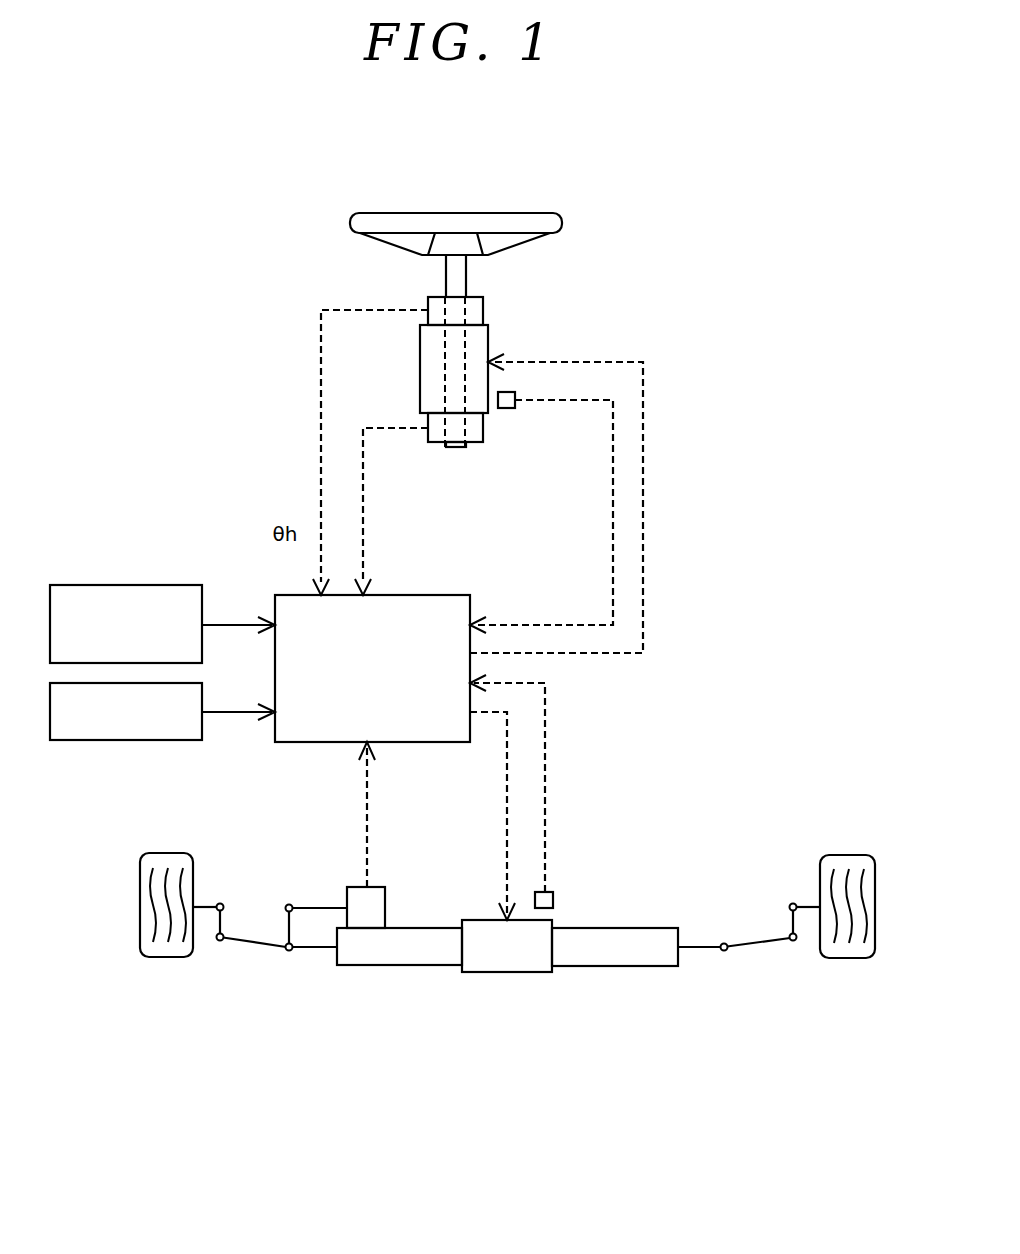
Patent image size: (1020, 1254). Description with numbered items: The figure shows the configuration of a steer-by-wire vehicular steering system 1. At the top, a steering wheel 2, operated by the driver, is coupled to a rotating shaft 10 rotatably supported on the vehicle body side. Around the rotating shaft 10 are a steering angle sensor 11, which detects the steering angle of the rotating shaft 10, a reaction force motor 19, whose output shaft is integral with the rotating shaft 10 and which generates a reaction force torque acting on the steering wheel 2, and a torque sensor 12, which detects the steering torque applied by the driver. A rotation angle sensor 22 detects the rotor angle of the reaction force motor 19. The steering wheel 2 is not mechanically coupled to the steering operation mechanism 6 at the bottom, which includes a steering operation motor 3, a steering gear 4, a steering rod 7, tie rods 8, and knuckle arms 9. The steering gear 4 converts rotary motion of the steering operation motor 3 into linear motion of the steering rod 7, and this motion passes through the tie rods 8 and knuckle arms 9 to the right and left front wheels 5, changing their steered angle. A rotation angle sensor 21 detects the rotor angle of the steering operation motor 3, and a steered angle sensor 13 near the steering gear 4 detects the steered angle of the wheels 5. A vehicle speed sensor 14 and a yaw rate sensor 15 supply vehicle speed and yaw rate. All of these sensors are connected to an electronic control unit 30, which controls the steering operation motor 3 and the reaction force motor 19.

The vehicular steering system 1 is at (677, 255).
The steering wheel 2 is at (545, 228).
The steering operation motor 3 is at (500, 975).
The steering gear 4 is at (400, 960).
The front wheels 5 is at (165, 957).
The steering operation mechanism 6 is at (550, 1012).
The steering rod 7 is at (313, 952).
The tie rods 8 is at (252, 943).
The knuckle arms 9 is at (224, 921).
The rotating shaft 10 is at (460, 278).
The steering angle sensor 11 is at (475, 308).
The torque sensor 12 is at (475, 430).
The steered angle sensor 13 is at (378, 902).
The vehicle speed sensor 14 is at (110, 585).
The yaw rate sensor 15 is at (110, 740).
The reaction force motor 19 is at (480, 340).
The rotation angle sensor 21 is at (553, 900).
The rotation angle sensor 22 is at (510, 392).
The electronic control unit (ECU) 30 is at (430, 595).